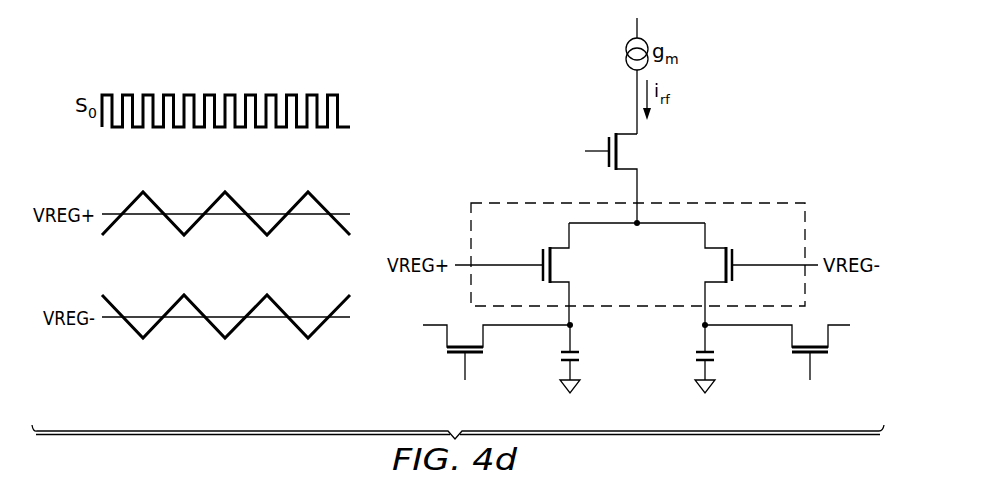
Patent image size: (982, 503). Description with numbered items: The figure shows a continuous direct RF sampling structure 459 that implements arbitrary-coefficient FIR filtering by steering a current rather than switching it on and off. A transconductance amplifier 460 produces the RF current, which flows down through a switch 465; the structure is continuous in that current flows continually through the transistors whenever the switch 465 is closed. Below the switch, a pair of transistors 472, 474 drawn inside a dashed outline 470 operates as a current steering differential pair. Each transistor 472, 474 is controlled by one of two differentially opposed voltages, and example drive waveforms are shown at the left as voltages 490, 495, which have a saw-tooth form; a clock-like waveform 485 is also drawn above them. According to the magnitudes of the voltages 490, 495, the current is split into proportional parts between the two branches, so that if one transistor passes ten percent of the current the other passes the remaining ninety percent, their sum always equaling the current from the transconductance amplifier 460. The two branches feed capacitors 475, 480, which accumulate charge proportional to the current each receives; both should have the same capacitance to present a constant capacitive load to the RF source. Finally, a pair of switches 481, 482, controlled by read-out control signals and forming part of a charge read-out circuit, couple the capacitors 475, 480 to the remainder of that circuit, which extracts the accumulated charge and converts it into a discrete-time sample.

The continuous direct RF sampling structure 459 is at (378, 65).
The transconductance amplifier 460 is at (626, 47).
The switch 465 is at (608, 166).
The differential pair 470 is at (749, 196).
The transistor 472 is at (542, 253).
The transistor 474 is at (734, 253).
The capacitor 475 is at (560, 360).
The capacitor 480 is at (694, 353).
The switch 481 is at (454, 357).
The switch 482 is at (820, 357).
The clock signal S0 waveform 485 is at (189, 96).
The voltage 490 is at (212, 204).
The voltage 495 is at (176, 303).